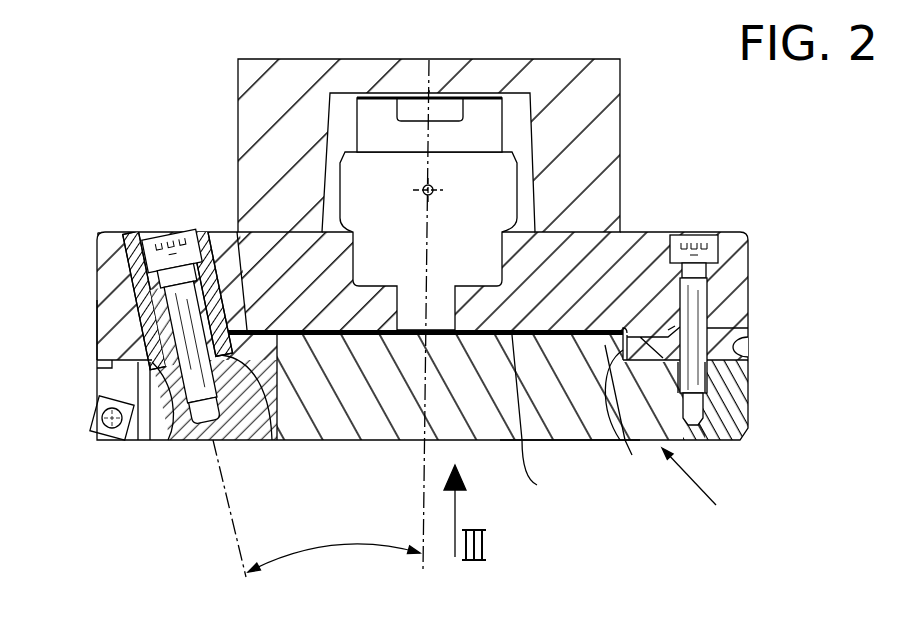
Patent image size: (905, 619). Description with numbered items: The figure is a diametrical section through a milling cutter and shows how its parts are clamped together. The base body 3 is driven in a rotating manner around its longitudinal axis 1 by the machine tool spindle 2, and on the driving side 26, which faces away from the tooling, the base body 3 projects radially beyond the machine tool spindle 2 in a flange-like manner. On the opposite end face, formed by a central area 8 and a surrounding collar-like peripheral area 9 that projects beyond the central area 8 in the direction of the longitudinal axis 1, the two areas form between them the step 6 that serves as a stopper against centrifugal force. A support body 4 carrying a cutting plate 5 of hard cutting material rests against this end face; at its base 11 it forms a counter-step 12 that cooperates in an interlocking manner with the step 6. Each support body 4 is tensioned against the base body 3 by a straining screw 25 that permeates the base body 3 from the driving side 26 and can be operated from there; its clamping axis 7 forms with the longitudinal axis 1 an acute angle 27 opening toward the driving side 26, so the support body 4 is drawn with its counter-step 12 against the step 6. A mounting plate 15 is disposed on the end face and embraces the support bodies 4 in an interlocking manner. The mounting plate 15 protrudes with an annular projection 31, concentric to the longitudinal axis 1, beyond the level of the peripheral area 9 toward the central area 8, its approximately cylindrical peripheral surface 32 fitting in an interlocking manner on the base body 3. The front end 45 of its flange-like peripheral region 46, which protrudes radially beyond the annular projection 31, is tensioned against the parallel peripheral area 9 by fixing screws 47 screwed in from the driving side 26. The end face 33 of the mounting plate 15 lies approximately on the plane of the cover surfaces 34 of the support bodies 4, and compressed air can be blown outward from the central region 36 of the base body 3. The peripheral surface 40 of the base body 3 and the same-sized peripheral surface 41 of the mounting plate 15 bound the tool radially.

The longitudinal axis 1 is at (431, 67).
The machine tool spindle 2 is at (568, 117).
The base body 3 is at (750, 308).
The support body 4 is at (138, 442).
The cutting plate 5 is at (92, 412).
The step 6 is at (263, 440).
The clamping axis 7 is at (223, 472).
The central area 8 is at (534, 420).
The peripheral area 9 is at (97, 366).
The base 11 is at (95, 335).
The counter-step 12 is at (224, 232).
The mounting plate 15 is at (702, 490).
The straining screw 25 is at (175, 300).
The driving side 26 is at (153, 189).
The acute angle 27 is at (328, 545).
The annular projection 31 is at (567, 338).
The peripheral surface 32 is at (629, 418).
The end face 33 is at (570, 440).
The cover surface 34 is at (172, 445).
The central region 36 is at (494, 198).
The peripheral surface 40 is at (750, 268).
The peripheral surface 41 is at (750, 395).
The front end 45 is at (745, 347).
The flange-like peripheral region 46 is at (667, 330).
The fixing screw 47 is at (693, 297).